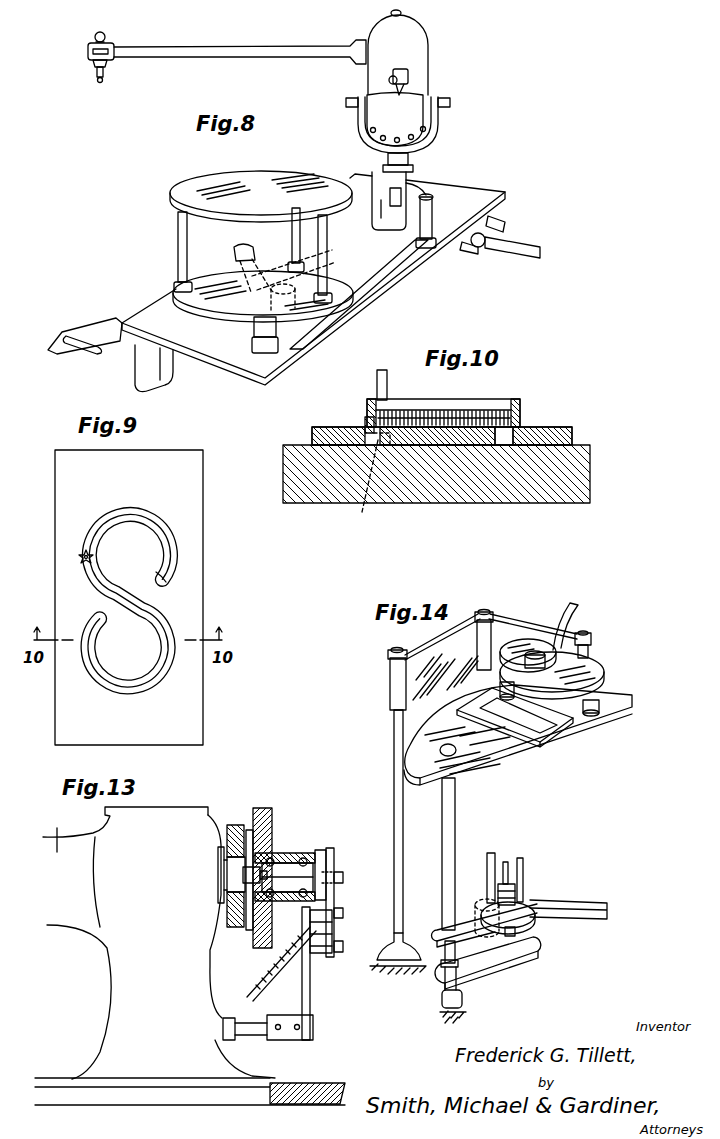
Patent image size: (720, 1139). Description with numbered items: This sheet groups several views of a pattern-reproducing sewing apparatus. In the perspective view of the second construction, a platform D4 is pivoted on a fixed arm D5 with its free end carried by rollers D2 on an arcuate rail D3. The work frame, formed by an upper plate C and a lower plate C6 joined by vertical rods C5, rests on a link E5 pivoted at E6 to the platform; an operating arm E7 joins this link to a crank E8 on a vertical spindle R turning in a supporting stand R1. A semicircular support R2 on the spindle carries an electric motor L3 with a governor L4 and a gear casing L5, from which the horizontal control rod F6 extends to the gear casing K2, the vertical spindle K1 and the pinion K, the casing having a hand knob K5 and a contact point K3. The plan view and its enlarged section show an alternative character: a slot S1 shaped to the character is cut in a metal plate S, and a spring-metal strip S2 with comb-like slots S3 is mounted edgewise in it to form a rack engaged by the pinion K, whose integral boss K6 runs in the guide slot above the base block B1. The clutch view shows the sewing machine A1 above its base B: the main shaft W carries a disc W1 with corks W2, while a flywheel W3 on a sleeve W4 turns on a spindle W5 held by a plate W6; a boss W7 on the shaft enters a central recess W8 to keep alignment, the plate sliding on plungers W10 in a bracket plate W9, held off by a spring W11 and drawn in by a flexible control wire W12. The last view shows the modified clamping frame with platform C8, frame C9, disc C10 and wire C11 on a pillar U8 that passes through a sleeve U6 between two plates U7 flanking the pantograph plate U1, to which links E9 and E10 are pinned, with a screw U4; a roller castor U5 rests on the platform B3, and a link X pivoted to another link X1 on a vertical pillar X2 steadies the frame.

In FIG. 8, the horizontal control rod F6 is at (292, 40).
In FIG. 8, the pinion K is at (99, 78).
In FIG. 10, the pinion K is at (366, 421).
In FIG. 9, the pinion K is at (83, 567).
In FIG. 8, the vertical spindle K1 is at (94, 65).
In FIG. 10, the vertical spindle K1 is at (386, 373).
In FIG. 9, the vertical spindle K1 is at (79, 557).
In FIG. 8, the gear casing K2 is at (89, 52).
In FIG. 8, the contact point K3 is at (103, 81).
In FIG. 8, the hand knob K5 is at (105, 34).
In FIG. 10, the boss K6 is at (373, 484).
In FIG. 8, the electric motor L3 is at (416, 91).
In FIG. 8, the governor L4 is at (410, 76).
In FIG. 8, the gear casing L5 is at (415, 40).
In FIG. 8, the vertical spindle R is at (392, 193).
In FIG. 8, the supporting stand R1 is at (383, 168).
In FIG. 8, the semicircular support R2 is at (438, 120).
In FIG. 8, the crank E8 is at (416, 190).
In FIG. 8, the upper plate C is at (252, 190).
In FIG. 8, the vertical rods C5 is at (179, 231).
In FIG. 8, the lower plate C6 is at (223, 308).
In FIG. 8, the link E5 is at (240, 266).
In FIG. 8, the pivot E6 is at (238, 246).
In FIG. 8, the operating arm E7 is at (357, 266).
In FIG. 8, the rollers D2 is at (482, 247).
In FIG. 8, the arcuate rail D3 is at (515, 246).
In FIG. 8, the base plate D4 is at (229, 362).
In FIG. 8, the fixed arm D5 is at (113, 358).
In FIG. 10, the base block B1 is at (446, 484).
In FIG. 10, the metal plate S is at (530, 434).
In FIG. 9, the metal plate S is at (195, 705).
In FIG. 10, the slot S1 is at (503, 446).
In FIG. 9, the slot S1 is at (168, 583).
In FIG. 10, the metal strip S2 is at (407, 411).
In FIG. 9, the metal strip S2 is at (170, 550).
In FIG. 10, the comb-like slots S3 is at (448, 412).
In FIG. 13, the sewing machine A1 is at (159, 943).
In FIG. 13, the base B is at (324, 1093).
In FIG. 13, the main machine shaft W is at (222, 875).
In FIG. 13, the disc W1 is at (234, 825).
In FIG. 13, the corks W2 is at (249, 830).
In FIG. 13, the flywheel W3 is at (268, 810).
In FIG. 13, the sleeve W4 is at (283, 858).
In FIG. 13, the spindle W5 is at (319, 866).
In FIG. 13, the plate W6 is at (334, 860).
In FIG. 13, the boss W7 is at (250, 878).
In FIG. 13, the central recess W8 is at (271, 856).
In FIG. 13, the bracket plate W9 is at (310, 1000).
In FIG. 13, the plungers W10 is at (339, 906).
In FIG. 13, the spring W11 is at (325, 928).
In FIG. 13, the flexible control wire W12 is at (263, 983).
In FIG. 14, the link X is at (513, 637).
In FIG. 14, the link X1 is at (418, 680).
In FIG. 14, the vertical pillar X2 is at (393, 791).
In FIG. 14, the platform B3 is at (388, 962).
In FIG. 14, the platform C8 is at (508, 762).
In FIG. 14, the frame C9 is at (570, 722).
In FIG. 14, the disc C10 is at (590, 658).
In FIG. 14, the wire C11 is at (573, 606).
In FIG. 14, the plate U1 is at (537, 923).
In FIG. 14, the screw U4 is at (510, 870).
In FIG. 14, the roller castor U5 is at (466, 1010).
In FIG. 14, the sleeve U6 is at (478, 935).
In FIG. 14, the plates U7 is at (457, 917).
In FIG. 14, the pillar U8 is at (455, 813).
In FIG. 14, the link E9 is at (520, 858).
In FIG. 14, the link E10 is at (566, 905).